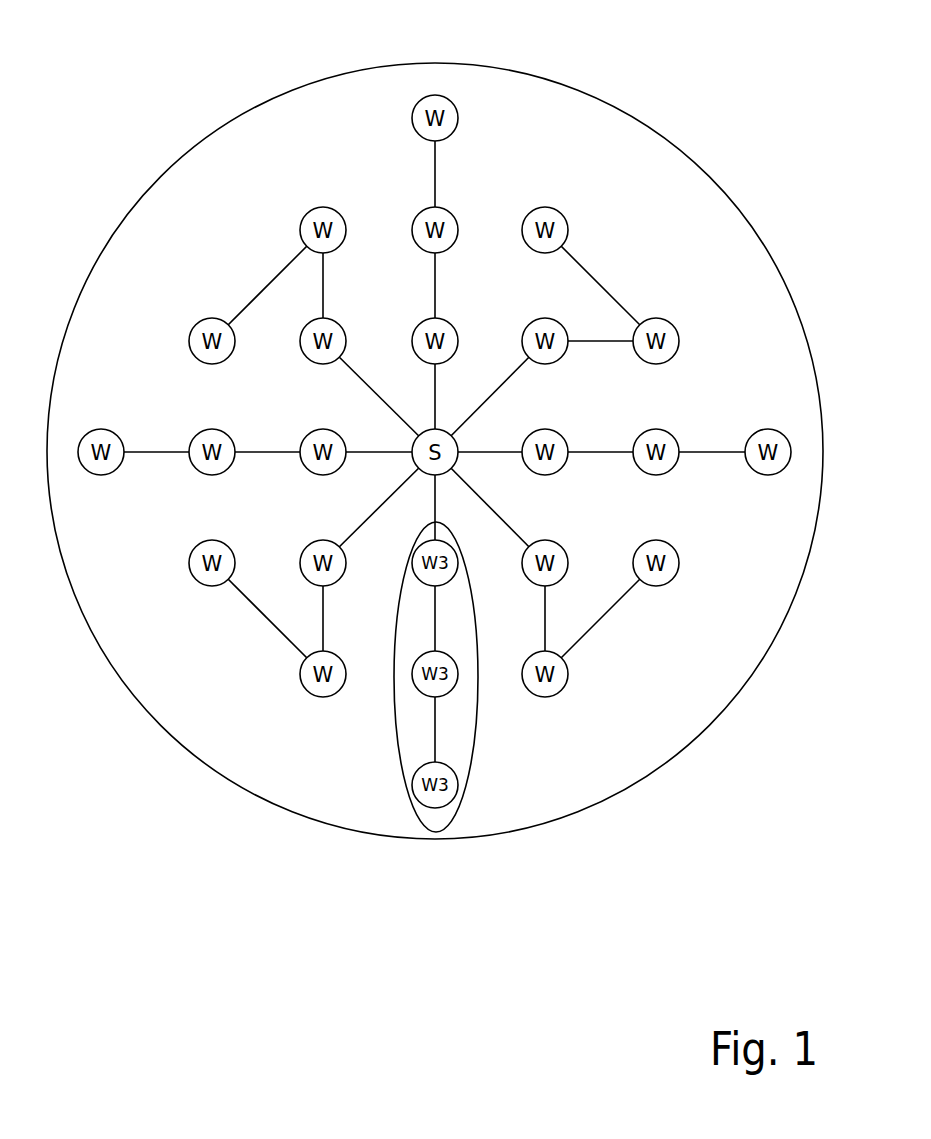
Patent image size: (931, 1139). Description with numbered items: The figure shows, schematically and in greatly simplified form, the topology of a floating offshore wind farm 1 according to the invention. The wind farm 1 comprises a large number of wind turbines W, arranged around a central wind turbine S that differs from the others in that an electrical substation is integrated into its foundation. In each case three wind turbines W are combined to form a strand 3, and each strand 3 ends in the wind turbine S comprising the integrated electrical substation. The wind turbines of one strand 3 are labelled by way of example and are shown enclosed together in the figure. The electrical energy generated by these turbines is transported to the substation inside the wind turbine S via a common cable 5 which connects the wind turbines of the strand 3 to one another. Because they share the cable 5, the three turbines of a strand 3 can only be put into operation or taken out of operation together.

The floating offshore wind farm 1 is at (703, 147).
The strand 3 is at (483, 753).
The cable 5 is at (433, 733).